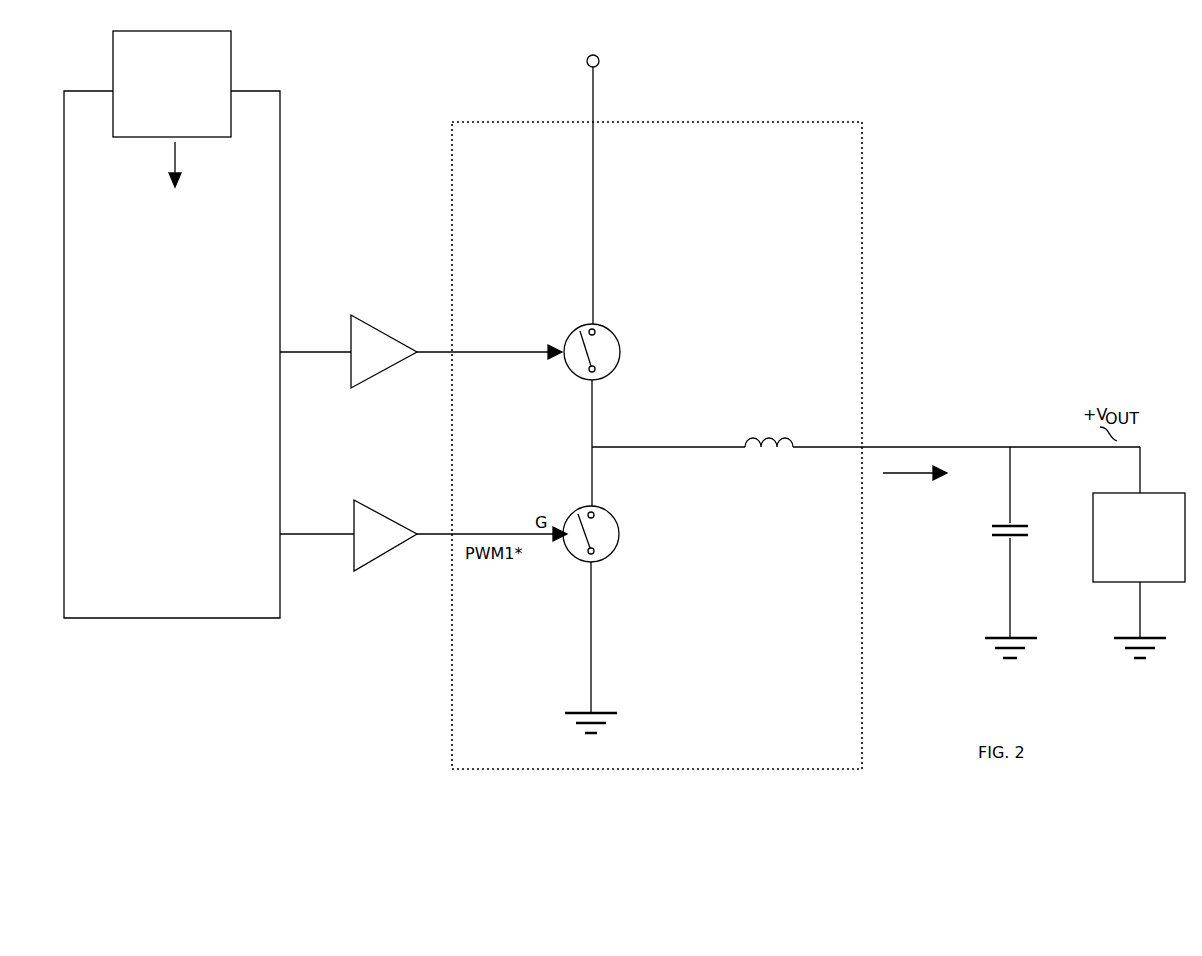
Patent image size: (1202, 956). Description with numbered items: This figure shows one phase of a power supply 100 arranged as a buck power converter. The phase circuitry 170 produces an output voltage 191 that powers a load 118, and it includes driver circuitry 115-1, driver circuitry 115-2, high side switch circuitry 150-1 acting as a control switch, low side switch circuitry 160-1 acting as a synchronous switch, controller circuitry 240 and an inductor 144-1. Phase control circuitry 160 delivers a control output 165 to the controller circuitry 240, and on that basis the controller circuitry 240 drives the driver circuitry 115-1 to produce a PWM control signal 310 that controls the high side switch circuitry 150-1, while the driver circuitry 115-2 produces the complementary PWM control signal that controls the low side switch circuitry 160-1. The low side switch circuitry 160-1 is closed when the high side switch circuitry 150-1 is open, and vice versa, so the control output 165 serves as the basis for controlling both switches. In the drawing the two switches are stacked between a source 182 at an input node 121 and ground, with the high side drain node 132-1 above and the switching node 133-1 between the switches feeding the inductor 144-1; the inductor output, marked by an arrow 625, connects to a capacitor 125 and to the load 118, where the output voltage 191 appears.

The power supply 100 is at (980, 150).
The load 118 is at (1126, 559).
The input voltage node 121 is at (598, 82).
The output capacitor 125 is at (988, 531).
The drain node of high side switch 132-1 is at (596, 273).
The phase node 133-1 is at (612, 425).
The inductor 144-1 is at (770, 431).
The high side switch circuitry 150-1 is at (624, 352).
The phase control circuitry 160 is at (159, 124).
The low side switch circuitry 160-1 is at (622, 535).
The control output 165 is at (183, 152).
The phase circuitry 170 is at (689, 202).
The voltage source 182 is at (572, 54).
The output voltage 191 is at (900, 447).
The controller circuitry 240 is at (159, 387).
The PWM control signal 310 is at (488, 349).
The output current 625 is at (912, 480).
The driver circuitry 115-1 is at (365, 388).
The driver circuitry 115-2 is at (372, 571).